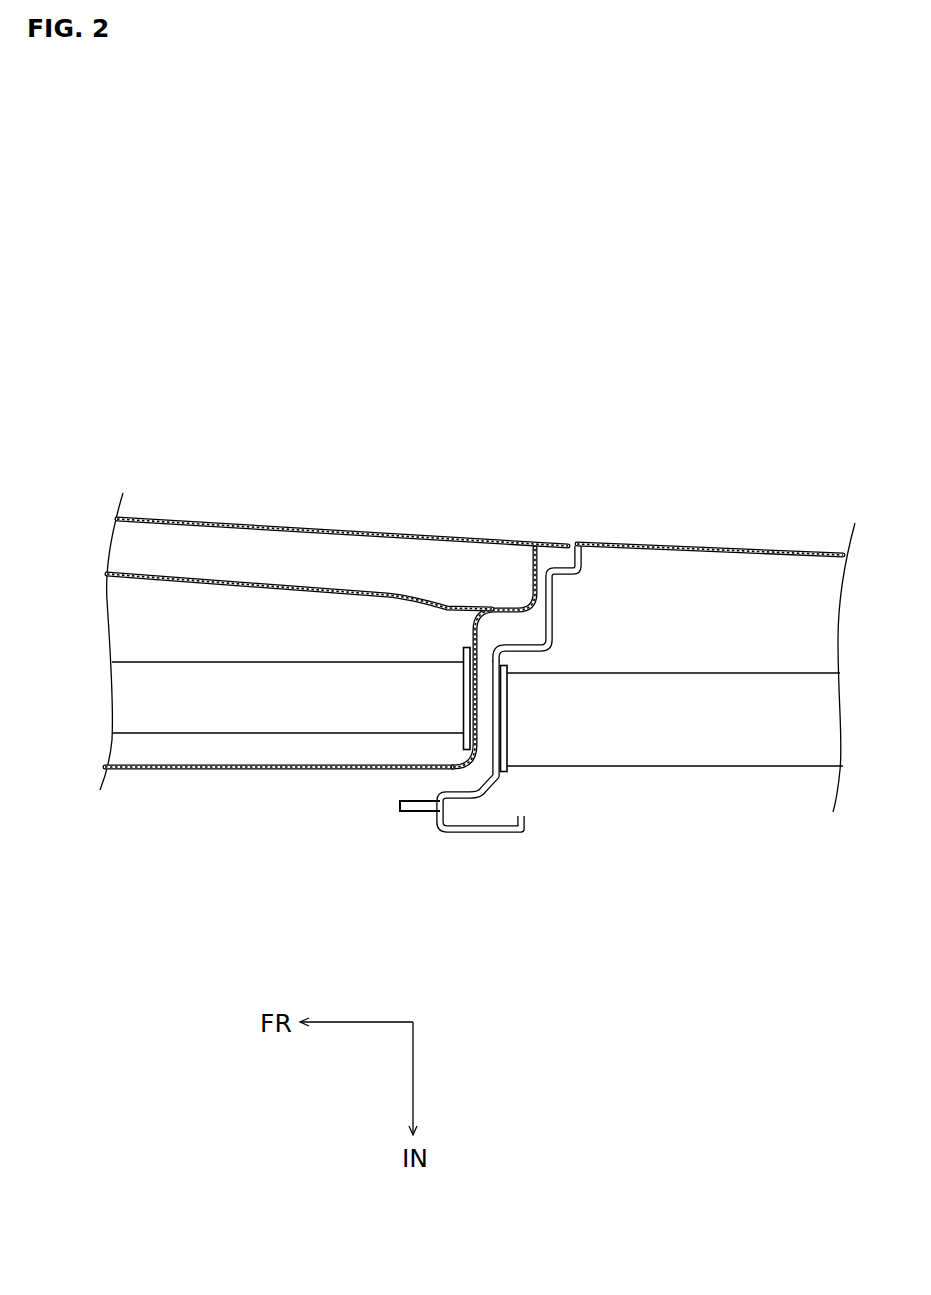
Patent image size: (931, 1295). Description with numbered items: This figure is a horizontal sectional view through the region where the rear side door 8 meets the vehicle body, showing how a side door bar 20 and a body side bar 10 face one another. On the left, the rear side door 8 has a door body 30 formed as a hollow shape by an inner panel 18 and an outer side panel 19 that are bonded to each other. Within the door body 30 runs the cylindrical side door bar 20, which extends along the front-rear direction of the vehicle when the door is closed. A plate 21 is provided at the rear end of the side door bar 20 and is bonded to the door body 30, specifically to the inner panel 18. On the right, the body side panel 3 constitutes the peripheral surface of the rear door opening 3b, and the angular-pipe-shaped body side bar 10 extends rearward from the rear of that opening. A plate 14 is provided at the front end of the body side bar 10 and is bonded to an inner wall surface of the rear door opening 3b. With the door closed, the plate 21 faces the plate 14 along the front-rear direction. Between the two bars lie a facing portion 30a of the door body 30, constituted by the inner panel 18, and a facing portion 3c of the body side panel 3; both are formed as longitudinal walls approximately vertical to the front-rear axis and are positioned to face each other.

The body side panel 3 is at (698, 545).
The rear door opening 3b is at (572, 545).
The facing portion of the body side panel 3c is at (478, 728).
The rear side door 8 is at (327, 520).
The body side bar 10 is at (710, 767).
The plate 14 is at (497, 772).
The inner panel 18 is at (285, 772).
The outer side panel 19 is at (217, 517).
The side door bar 20 is at (383, 657).
The plate 21 is at (467, 647).
The door body 30 is at (185, 772).
The facing portion of the door body 30a is at (437, 830).